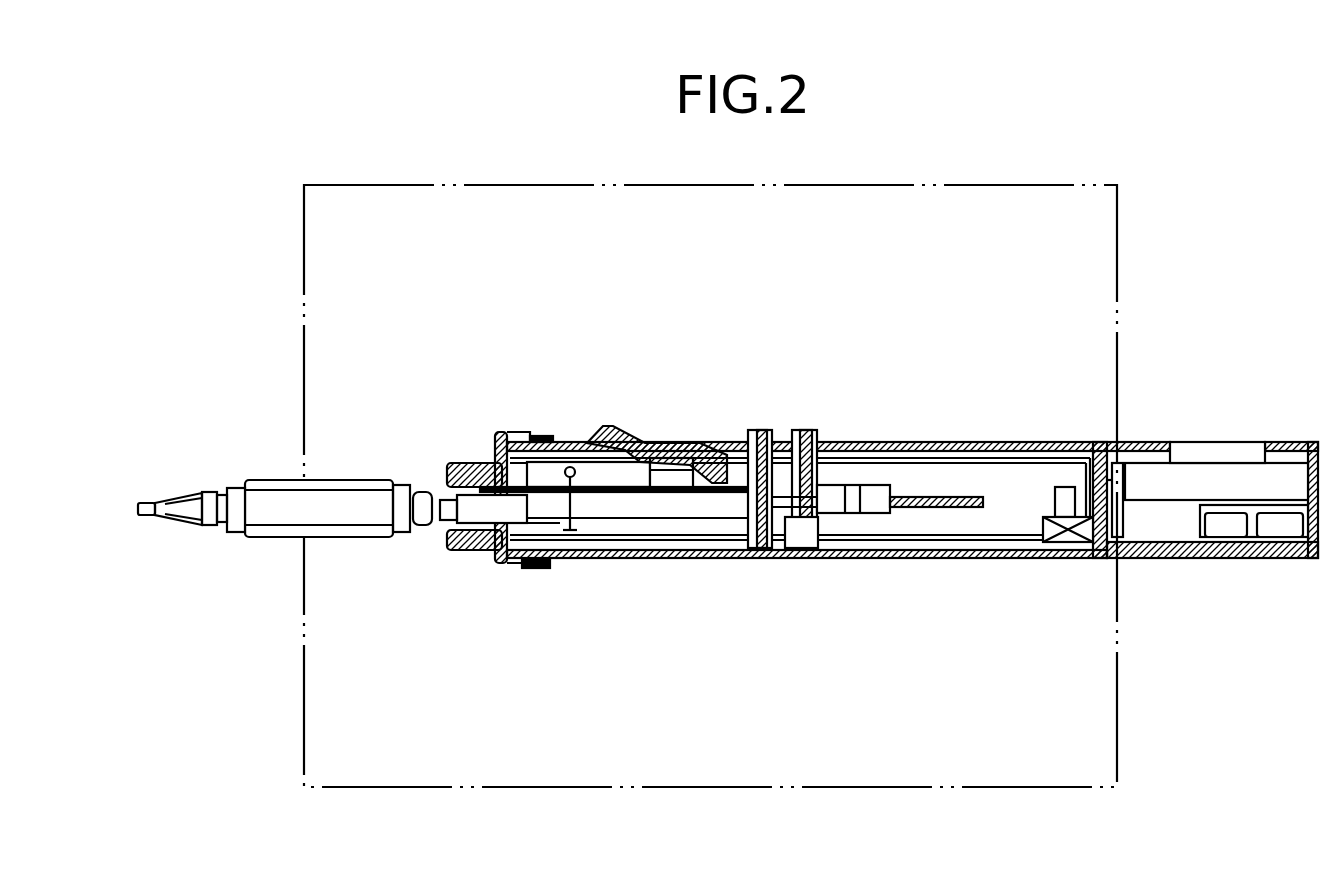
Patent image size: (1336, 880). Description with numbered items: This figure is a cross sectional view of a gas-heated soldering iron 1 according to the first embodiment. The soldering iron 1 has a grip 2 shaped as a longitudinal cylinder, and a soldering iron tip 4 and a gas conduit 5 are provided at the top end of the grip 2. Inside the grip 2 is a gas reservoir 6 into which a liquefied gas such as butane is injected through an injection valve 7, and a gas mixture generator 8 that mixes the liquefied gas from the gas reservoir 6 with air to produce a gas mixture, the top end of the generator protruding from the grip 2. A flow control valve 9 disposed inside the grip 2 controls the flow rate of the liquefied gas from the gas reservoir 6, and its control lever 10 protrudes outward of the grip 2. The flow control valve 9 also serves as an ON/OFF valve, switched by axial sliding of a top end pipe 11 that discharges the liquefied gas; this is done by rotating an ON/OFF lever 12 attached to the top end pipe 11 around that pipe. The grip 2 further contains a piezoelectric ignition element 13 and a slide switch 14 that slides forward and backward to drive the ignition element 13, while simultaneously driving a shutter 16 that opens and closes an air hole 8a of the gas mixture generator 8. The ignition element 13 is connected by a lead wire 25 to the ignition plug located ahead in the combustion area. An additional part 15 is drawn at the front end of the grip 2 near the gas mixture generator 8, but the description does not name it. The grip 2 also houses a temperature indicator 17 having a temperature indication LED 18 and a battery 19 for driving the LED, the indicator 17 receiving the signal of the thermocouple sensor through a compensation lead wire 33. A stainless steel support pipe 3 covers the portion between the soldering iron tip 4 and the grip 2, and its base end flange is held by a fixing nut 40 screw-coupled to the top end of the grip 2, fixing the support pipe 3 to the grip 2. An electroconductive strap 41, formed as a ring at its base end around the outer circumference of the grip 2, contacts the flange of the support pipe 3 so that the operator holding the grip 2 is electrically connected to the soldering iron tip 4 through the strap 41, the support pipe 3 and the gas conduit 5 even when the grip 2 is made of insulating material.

The soldering iron 1 is at (902, 336).
The grip 2 is at (947, 560).
The support pipe 3 is at (357, 478).
The soldering iron tip 4 is at (186, 490).
The gas conduit 5 is at (177, 530).
The gas reservoir 6 is at (968, 440).
The injection valve 7 is at (1062, 558).
The gas mixture generator 8 is at (470, 485).
The air hole 8a is at (437, 530).
The flow control valve 9 is at (850, 515).
The control lever 10 is at (800, 430).
The top end pipe 11 is at (780, 548).
The ON/OFF lever 12 is at (757, 430).
The piezoelectric ignition element 13 is at (632, 490).
The slide switch 14 is at (652, 432).
The cylinder holder 15 is at (518, 440).
The shutter 16 is at (445, 490).
The temperature indicator 17 is at (1283, 475).
The temperature indication LED 18 is at (1200, 447).
The battery 19 is at (1262, 558).
The lead wire 25 is at (585, 525).
The compensation lead wire 33 is at (548, 187).
The fixing nut 40 is at (463, 553).
The electroconductive strap 41 is at (530, 567).